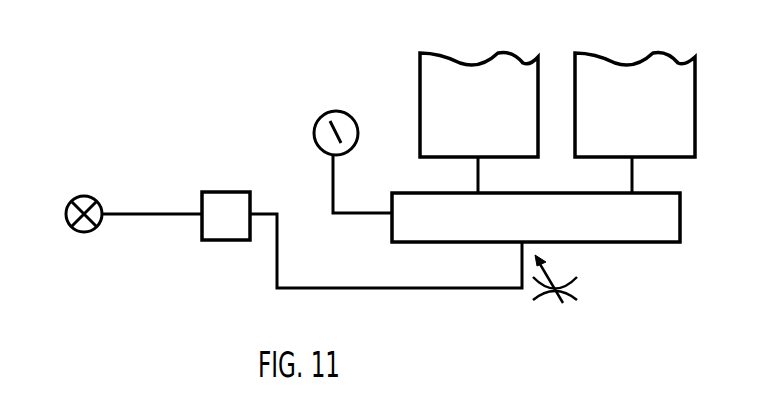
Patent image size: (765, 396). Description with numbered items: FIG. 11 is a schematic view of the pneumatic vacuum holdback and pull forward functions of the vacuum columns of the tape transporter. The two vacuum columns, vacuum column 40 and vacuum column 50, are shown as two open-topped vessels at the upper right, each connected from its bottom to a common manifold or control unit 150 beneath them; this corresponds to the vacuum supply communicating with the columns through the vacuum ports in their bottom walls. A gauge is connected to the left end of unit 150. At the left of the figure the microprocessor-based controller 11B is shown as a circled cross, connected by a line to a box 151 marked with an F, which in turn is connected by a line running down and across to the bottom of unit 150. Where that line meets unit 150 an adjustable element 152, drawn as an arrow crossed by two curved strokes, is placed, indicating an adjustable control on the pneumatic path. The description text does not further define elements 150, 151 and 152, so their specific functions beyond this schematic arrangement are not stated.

The microprocessor-based controller 11B is at (84, 196).
The filter 151 is at (225, 192).
The control unit 150 is at (651, 228).
The vacuum column 40 is at (420, 74).
The vacuum column 50 is at (695, 77).
The adjustable valve 152 is at (540, 302).